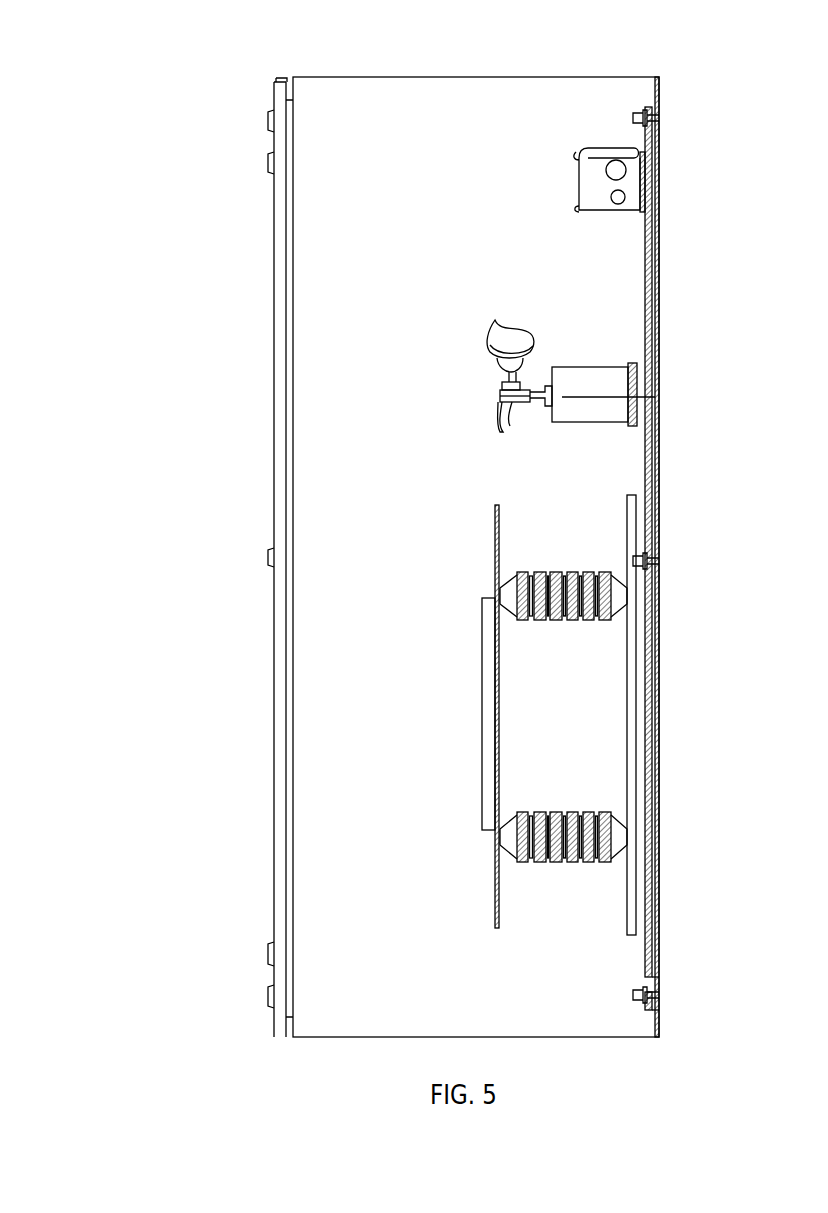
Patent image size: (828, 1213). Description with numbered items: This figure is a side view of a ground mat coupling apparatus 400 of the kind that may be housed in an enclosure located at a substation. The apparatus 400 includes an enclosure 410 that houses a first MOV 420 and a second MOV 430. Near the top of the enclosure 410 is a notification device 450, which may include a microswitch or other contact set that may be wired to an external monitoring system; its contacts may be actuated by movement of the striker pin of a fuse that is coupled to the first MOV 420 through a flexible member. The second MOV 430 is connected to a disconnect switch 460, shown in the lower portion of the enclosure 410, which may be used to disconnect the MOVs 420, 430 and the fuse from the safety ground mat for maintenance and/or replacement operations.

The ground mat coupling apparatus 400 is at (150, 147).
The enclosure 410 is at (364, 77).
The first MOV 420 is at (530, 328).
The second MOV 430 is at (510, 408).
The notification device 450 is at (578, 182).
The disconnect switch 460 is at (482, 756).